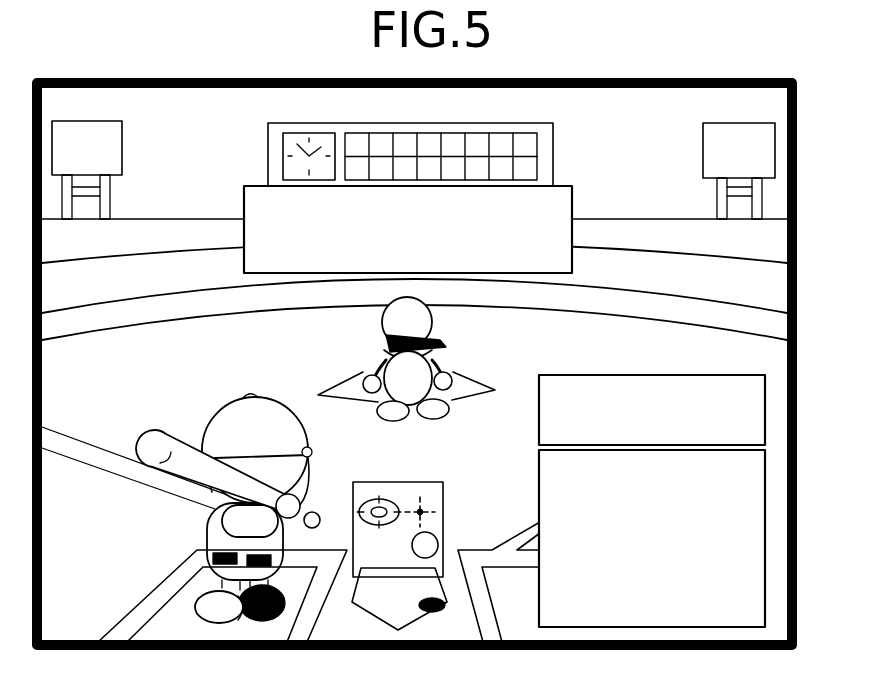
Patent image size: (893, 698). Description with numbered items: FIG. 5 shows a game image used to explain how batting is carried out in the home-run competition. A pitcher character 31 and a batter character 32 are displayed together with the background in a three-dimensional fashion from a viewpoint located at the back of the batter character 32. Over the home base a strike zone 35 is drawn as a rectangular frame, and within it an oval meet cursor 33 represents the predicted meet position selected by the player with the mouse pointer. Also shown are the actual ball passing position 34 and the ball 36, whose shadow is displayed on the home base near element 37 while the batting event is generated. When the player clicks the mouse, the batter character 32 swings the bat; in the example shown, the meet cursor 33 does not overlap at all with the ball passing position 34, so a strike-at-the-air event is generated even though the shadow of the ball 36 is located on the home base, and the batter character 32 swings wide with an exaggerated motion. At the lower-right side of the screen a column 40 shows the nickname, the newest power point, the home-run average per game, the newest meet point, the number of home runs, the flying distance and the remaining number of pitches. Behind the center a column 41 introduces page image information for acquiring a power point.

The pitcher character 31 is at (445, 352).
The batter character 32 is at (230, 414).
The meet cursor 33 is at (383, 506).
The ball passing position 34 is at (432, 512).
The strike zone 35 is at (428, 482).
The ball 36 is at (435, 543).
The home plate 37 is at (428, 607).
The column 40 is at (766, 533).
The column 41 is at (576, 208).